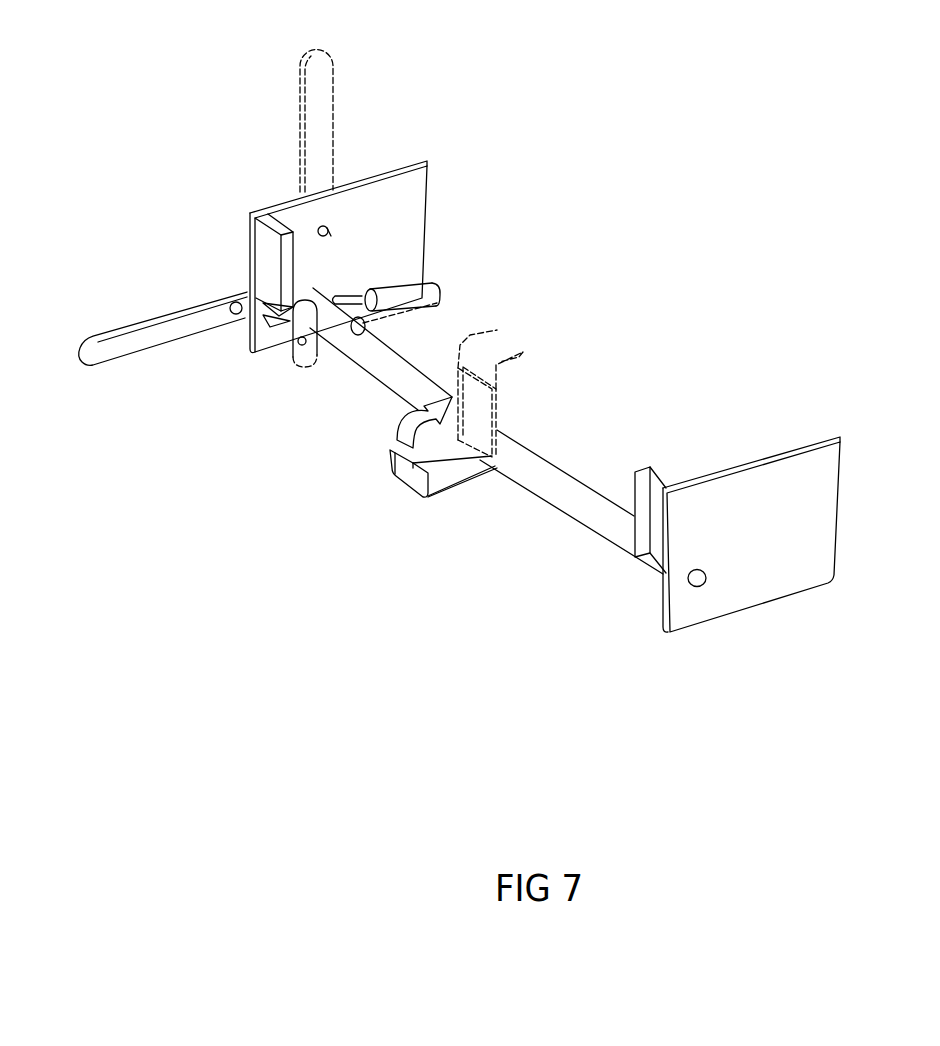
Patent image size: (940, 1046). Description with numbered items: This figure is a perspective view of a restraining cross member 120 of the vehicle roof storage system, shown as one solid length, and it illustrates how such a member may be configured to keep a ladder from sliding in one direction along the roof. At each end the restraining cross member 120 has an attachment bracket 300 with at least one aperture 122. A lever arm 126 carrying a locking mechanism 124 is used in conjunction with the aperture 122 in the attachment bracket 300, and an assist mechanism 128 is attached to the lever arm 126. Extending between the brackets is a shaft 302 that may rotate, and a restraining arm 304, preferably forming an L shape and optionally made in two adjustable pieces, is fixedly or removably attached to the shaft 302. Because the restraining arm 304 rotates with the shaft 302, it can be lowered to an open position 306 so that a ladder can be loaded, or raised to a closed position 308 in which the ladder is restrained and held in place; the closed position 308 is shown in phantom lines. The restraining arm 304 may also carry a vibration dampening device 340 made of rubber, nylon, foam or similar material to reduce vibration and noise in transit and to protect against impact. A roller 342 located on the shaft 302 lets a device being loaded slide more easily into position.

The restraining cross member 120 is at (263, 166).
The aperture 122 is at (330, 233).
The locking mechanism 124 is at (241, 296).
The lever arm 126 is at (140, 320).
The assist mechanism 128 is at (428, 290).
The attachment bracket 300 is at (402, 168).
The shaft 302 is at (340, 396).
The restraining arm 304 is at (538, 376).
The open position 306 is at (400, 473).
The closed position 308 is at (500, 340).
The vibration dampening device 340 is at (460, 466).
The roller 342 is at (563, 468).